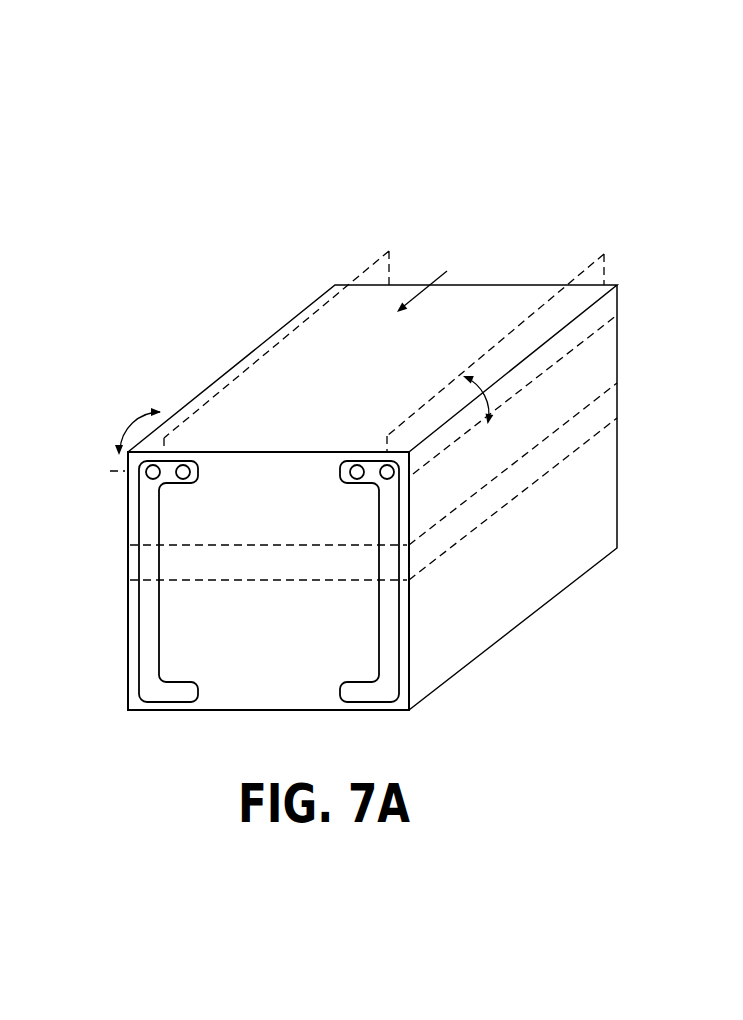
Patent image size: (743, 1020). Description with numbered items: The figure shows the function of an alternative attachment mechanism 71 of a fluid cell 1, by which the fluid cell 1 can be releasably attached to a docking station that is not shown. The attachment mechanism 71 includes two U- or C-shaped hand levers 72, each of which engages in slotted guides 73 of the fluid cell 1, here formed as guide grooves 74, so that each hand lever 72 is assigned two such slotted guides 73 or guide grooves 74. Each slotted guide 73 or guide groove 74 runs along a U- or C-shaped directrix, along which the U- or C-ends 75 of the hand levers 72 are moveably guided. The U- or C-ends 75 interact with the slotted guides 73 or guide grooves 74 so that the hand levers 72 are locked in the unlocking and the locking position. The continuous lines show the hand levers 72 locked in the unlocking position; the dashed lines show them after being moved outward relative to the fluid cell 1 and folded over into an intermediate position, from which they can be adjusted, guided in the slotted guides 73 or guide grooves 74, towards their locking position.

The fluid cell 1 is at (495, 135).
The attachment mechanism 71 is at (641, 246).
The hand lever 72 is at (378, 254).
The slotted guide 73 is at (148, 643).
The guide groove 74 is at (398, 585).
The U- or C-end 75 is at (162, 467).